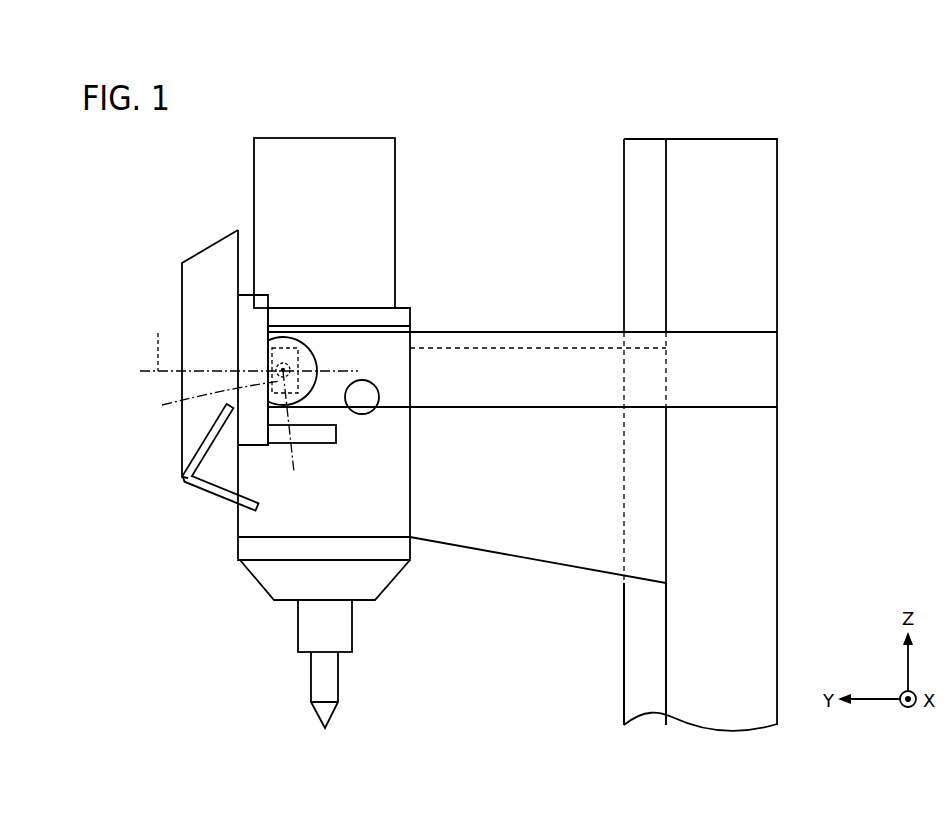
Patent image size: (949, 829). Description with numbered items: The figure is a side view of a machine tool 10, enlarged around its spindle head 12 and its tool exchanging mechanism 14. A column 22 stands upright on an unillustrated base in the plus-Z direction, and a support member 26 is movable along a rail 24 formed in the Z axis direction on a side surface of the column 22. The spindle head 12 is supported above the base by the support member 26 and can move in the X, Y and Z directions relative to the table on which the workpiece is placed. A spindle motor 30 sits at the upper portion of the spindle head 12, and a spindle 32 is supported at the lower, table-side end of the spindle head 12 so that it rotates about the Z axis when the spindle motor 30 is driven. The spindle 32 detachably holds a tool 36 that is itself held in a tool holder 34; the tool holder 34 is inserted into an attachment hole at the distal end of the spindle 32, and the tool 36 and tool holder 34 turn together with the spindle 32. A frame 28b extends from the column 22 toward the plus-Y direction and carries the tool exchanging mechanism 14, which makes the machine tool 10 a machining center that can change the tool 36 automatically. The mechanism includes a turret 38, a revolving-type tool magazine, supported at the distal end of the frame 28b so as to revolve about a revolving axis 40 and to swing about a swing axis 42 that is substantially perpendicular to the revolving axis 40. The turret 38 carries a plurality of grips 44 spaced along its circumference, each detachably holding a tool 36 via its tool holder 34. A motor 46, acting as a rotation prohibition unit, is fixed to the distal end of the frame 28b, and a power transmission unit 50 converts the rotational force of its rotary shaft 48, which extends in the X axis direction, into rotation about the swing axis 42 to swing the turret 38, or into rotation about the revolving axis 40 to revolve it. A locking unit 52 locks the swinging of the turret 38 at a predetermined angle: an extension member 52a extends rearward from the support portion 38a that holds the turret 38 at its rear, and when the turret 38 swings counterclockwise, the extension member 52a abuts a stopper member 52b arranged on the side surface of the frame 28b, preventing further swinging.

The machine tool 10 is at (470, 120).
The spindle head 12 is at (252, 525).
The tool exchanging mechanism 14 is at (172, 245).
The column 22 is at (760, 472).
The rail 24 is at (635, 682).
The support member 26 is at (502, 543).
The frame 28b is at (472, 330).
The spindle motor 30 is at (383, 171).
The spindle 32 is at (387, 573).
The tool holder 34 is at (340, 627).
The tool 36 is at (328, 683).
The turret 38 is at (208, 253).
The support portion 38a is at (250, 309).
The revolving axis 40 is at (249, 341).
The swing axis 42 is at (284, 366).
The grip 44 is at (205, 453).
The motor 46 is at (342, 436).
The rotary shaft 48 is at (159, 399).
The power transmission unit 50 is at (317, 357).
The locking unit 52 is at (391, 431).
The extension member 52a is at (338, 440).
The stopper member 52b is at (366, 412).